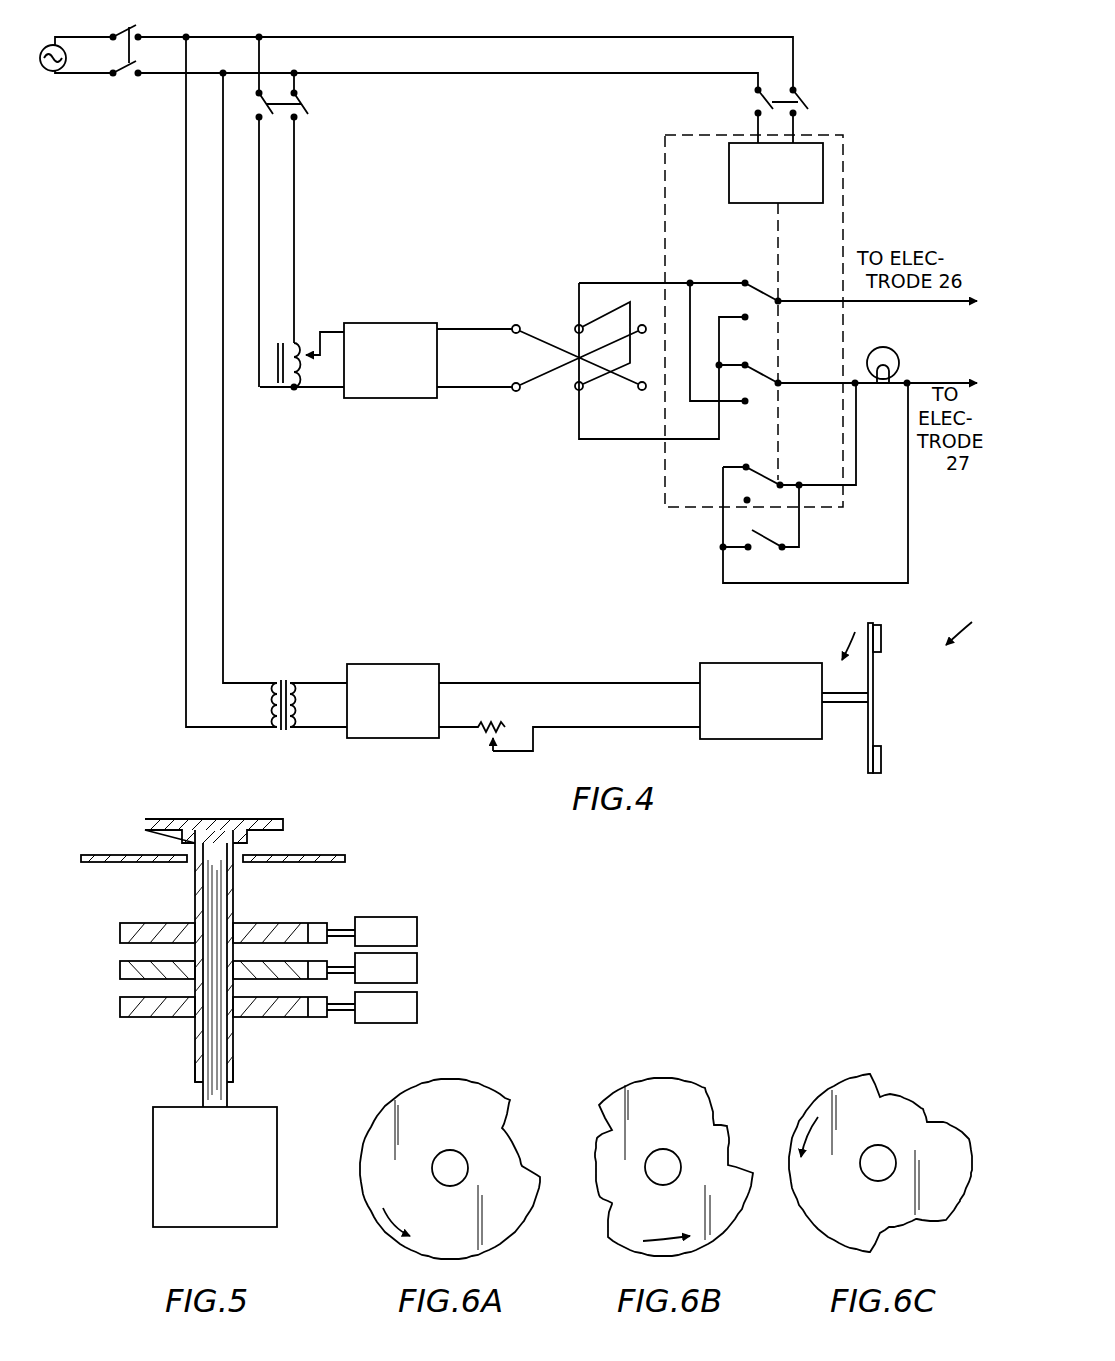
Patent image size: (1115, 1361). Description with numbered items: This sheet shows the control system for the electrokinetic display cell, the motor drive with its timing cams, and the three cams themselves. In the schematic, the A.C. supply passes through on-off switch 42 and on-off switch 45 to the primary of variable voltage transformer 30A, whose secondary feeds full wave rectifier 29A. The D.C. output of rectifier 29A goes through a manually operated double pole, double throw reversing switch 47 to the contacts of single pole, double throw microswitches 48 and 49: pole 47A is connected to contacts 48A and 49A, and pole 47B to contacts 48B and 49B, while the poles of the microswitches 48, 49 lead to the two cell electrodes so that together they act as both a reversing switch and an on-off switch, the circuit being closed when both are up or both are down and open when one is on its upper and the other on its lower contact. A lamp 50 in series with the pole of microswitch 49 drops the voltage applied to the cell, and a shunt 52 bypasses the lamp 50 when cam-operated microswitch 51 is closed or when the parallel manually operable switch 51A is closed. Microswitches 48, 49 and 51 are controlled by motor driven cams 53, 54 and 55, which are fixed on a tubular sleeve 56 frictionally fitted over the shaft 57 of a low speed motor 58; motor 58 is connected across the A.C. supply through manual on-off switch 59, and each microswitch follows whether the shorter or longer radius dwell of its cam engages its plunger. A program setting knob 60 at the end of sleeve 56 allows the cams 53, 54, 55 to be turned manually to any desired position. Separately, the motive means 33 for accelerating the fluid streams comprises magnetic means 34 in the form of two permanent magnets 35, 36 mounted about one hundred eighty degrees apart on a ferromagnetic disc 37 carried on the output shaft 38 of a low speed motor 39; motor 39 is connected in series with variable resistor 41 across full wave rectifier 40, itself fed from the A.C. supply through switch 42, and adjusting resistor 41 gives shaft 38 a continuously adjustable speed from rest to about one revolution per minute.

In FIG. 4, the on-off switch 42 is at (124, 22).
In FIG. 4, the on-off switch 45 is at (306, 104).
In FIG. 4, the variable voltage transformer 30A is at (298, 393).
In FIG. 4, the full wave rectifier 29A is at (397, 400).
In FIG. 4, the reversing switch 47 is at (560, 378).
In FIG. 4, the pole of reversing switch 47A is at (596, 321).
In FIG. 4, the pole of reversing switch 47B is at (596, 391).
In FIG. 4, the microswitch 48 is at (772, 292).
In FIG. 5, the microswitch 48 is at (373, 942).
In FIG. 4, the contact of microswitch 48A is at (750, 280).
In FIG. 4, the contact of microswitch 48B is at (752, 306).
In FIG. 4, the microswitch 49 is at (770, 378).
In FIG. 5, the microswitch 49 is at (373, 979).
In FIG. 4, the contact of microswitch 49A is at (750, 402).
In FIG. 4, the contact of microswitch 49B is at (748, 362).
In FIG. 4, the lamp 50 is at (893, 355).
In FIG. 4, the microswitch 51 is at (765, 478).
In FIG. 5, the microswitch 51 is at (373, 1018).
In FIG. 4, the manually operable switch 51A is at (768, 542).
In FIG. 4, the shunt 52 is at (787, 585).
In FIG. 4, the low speed motor 58 is at (729, 168).
In FIG. 5, the low speed motor 58 is at (153, 1155).
In FIG. 4, the manual on-off switch 59 is at (784, 100).
In FIG. 4, the full wave rectifier 40 is at (415, 664).
In FIG. 4, the variable resistor 41 is at (482, 738).
In FIG. 4, the motor 39 is at (760, 663).
In FIG. 4, the output shaft 38 is at (851, 704).
In FIG. 4, the disc 37 is at (875, 708).
In FIG. 4, the permanent magnet 35 is at (883, 636).
In FIG. 4, the permanent magnet 36 is at (883, 762).
In FIG. 4, the motive means 33 is at (839, 634).
In FIG. 4, the magnetic means 34 is at (957, 620).
In FIG. 5, the program setting knob 60 is at (212, 819).
In FIG. 5, the sleeve 56 is at (234, 893).
In FIG. 5, the cam 53 is at (120, 930).
In FIG. 6A, the cam 53 is at (490, 1100).
In FIG. 5, the cam 54 is at (120, 968).
In FIG. 6B, the cam 54 is at (710, 1100).
In FIG. 5, the cam 55 is at (118, 1005).
In FIG. 6C, the cam 55 is at (875, 1097).
In FIG. 5, the shaft 57 is at (205, 1060).